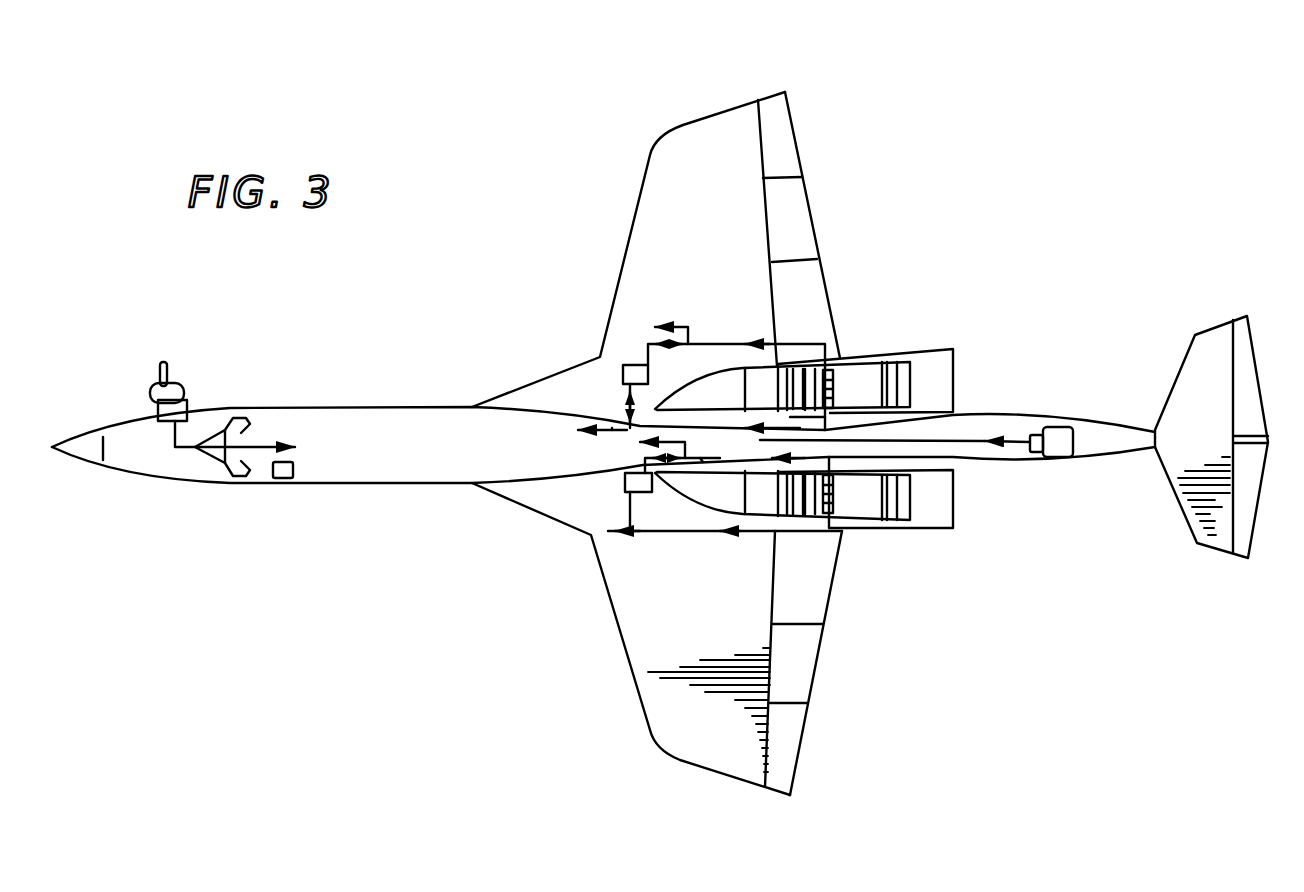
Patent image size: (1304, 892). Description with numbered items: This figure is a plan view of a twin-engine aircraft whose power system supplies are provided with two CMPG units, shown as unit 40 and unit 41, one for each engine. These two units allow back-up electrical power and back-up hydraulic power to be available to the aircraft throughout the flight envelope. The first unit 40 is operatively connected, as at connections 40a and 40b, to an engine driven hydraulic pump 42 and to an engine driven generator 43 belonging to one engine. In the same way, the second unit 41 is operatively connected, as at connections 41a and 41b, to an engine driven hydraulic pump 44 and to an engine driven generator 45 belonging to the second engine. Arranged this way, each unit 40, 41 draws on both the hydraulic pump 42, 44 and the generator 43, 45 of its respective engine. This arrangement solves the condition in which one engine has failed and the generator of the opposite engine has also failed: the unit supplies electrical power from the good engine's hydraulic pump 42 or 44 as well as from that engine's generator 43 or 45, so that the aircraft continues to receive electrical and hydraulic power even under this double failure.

The CMPG unit 40 is at (618, 360).
The operative connection 40a is at (718, 343).
The operative connection 40b is at (612, 412).
The CMPG unit 41 is at (612, 488).
The operative connection 41a is at (687, 533).
The operative connection 41b is at (703, 460).
The engine driven hydraulic pump 42 is at (830, 377).
The engine driven generator 43 is at (838, 395).
The engine driven hydraulic pump 44 is at (835, 502).
The engine driven generator 45 is at (837, 483).